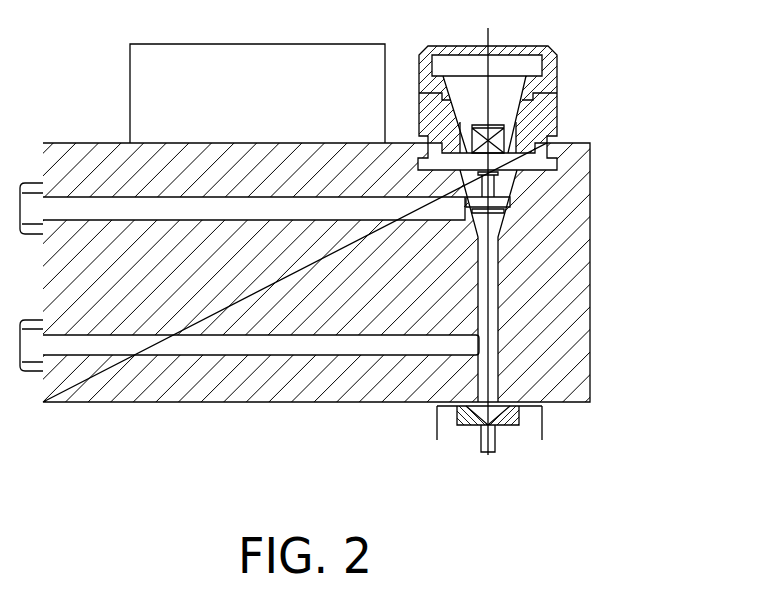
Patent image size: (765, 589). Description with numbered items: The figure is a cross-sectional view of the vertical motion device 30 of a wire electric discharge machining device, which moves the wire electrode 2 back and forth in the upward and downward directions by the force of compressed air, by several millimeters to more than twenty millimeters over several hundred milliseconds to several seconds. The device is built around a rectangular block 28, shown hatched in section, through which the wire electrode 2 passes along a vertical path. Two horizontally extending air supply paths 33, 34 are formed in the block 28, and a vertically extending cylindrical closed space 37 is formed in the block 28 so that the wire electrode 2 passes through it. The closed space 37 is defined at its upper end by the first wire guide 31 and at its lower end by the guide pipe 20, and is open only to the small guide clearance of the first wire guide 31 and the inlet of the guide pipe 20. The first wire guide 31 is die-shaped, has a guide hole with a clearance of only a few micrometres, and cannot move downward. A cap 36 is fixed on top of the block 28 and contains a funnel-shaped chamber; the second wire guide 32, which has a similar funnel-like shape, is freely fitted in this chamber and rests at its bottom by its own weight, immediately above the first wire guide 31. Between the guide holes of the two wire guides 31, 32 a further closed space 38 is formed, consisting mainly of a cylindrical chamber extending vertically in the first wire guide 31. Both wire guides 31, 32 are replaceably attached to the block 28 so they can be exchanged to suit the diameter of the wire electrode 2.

The wire electrode 2 is at (491, 38).
The guide pipe 20 is at (495, 437).
The block 28 is at (325, 388).
The vertical motion device 30 is at (682, 153).
The first wire guide 31 is at (508, 215).
The second wire guide 32 is at (532, 103).
The air supply path 33 is at (220, 353).
The air supply path 34 is at (138, 203).
The cap 36 is at (558, 62).
The closed space 37 is at (497, 348).
The closed space 38 is at (497, 185).